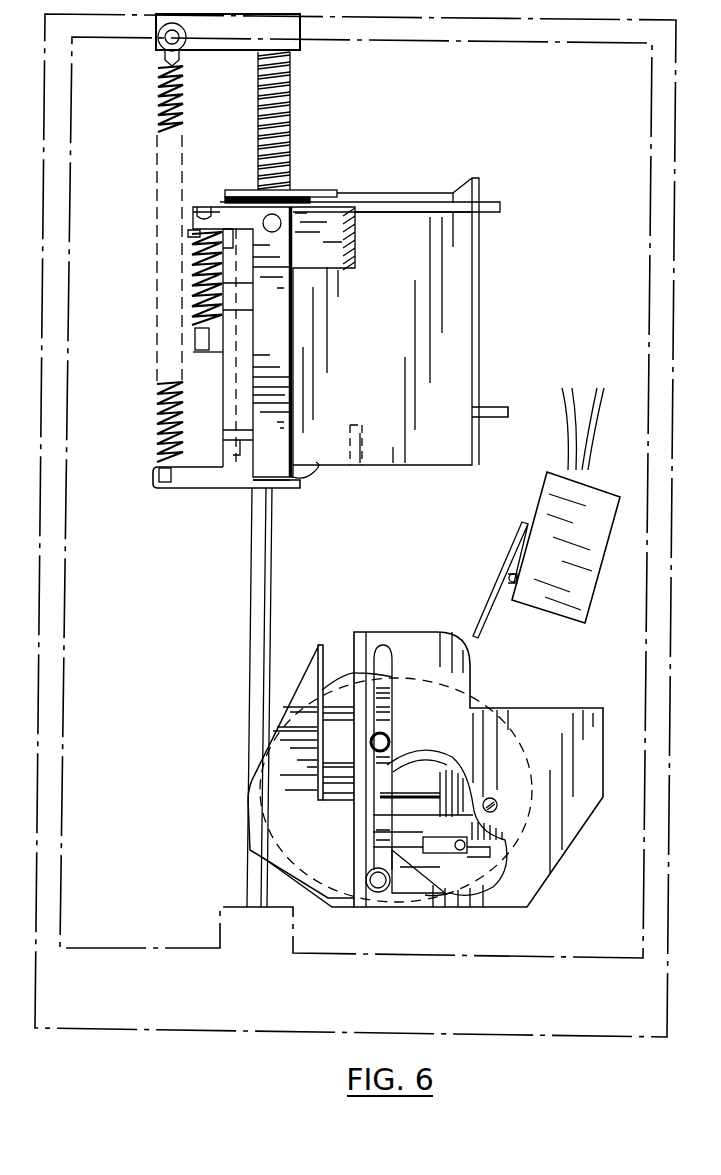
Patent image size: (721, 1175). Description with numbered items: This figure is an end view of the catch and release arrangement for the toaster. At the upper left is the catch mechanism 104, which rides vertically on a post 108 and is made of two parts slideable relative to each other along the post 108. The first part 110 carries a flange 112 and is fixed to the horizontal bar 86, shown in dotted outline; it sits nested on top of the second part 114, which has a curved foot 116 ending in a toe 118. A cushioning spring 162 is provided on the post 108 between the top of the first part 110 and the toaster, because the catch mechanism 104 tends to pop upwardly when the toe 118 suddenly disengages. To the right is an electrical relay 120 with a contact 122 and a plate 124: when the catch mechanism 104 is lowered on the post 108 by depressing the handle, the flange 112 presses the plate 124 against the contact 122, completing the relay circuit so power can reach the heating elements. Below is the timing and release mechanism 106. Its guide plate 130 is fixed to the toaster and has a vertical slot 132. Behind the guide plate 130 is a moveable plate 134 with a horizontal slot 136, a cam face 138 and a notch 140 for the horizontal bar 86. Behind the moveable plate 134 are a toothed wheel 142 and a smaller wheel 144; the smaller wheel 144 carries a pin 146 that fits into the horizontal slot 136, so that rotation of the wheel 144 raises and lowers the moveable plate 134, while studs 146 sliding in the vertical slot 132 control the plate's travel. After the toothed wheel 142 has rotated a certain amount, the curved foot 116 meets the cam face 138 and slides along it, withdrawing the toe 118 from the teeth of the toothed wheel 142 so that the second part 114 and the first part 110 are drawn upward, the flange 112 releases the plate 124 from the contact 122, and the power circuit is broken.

The horizontal bar 86 is at (362, 430).
The catch mechanism 104 is at (423, 177).
The timing and release mechanism 106 is at (526, 691).
The post 108 is at (251, 510).
The first part 110 is at (480, 265).
The flange 112 is at (500, 410).
The second part 114 is at (317, 215).
The curved foot 116 is at (298, 487).
The toe 118 is at (318, 474).
The electrical relay 120 is at (595, 495).
The contact 122 is at (512, 587).
The plate 124 is at (510, 552).
The guide plate 130 is at (415, 632).
The vertical slot 132 is at (390, 672).
The moveable plate 134 is at (303, 670).
The horizontal slot 136 is at (432, 838).
The cam face 138 is at (290, 888).
The notch 140 is at (320, 775).
The toothed wheel 142 is at (342, 682).
The smaller wheel 144 is at (445, 765).
The pin 146 is at (390, 740).
The cushioning spring 162 is at (292, 112).